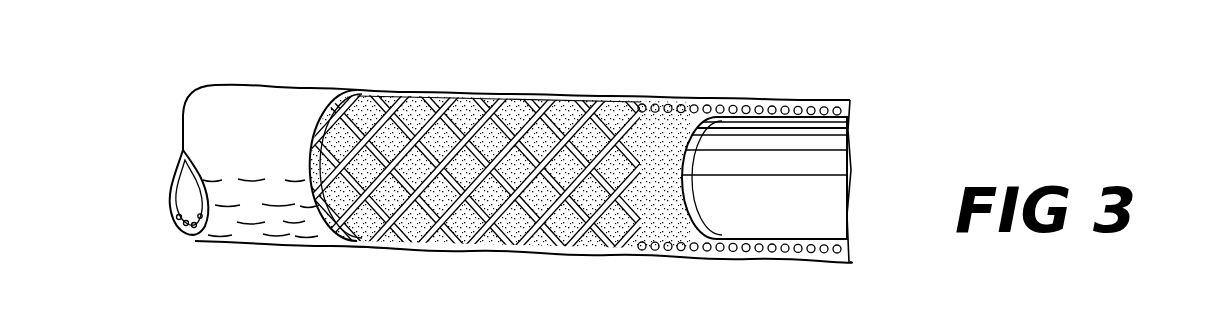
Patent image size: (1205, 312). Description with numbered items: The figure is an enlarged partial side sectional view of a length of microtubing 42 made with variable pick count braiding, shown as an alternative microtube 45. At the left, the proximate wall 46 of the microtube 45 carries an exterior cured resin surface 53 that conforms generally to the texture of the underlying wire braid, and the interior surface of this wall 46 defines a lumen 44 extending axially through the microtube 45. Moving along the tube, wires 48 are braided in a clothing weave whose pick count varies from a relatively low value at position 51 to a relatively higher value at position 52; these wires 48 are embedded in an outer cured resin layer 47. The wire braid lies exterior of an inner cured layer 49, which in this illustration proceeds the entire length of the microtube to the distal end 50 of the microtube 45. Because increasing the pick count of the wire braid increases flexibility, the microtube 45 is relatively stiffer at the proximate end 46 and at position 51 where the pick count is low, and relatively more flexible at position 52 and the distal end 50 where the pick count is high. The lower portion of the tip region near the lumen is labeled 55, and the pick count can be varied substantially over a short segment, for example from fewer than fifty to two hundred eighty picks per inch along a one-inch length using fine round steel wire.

The catheter tubing assembly 42 is at (532, 50).
The lumen 44 is at (159, 227).
The microtube 45 is at (272, 79).
The proximate wall 46 is at (190, 104).
The outer cured resin layer 47 is at (356, 94).
The wires 48 is at (483, 100).
The inner cured layer 49 is at (755, 112).
The distal end 50 is at (845, 109).
The position of relatively low pick count 51 is at (373, 250).
The position of relatively higher pick count 52 is at (770, 259).
The exterior cured resin surface 53 is at (249, 218).
The lower tip portion 55 is at (202, 304).